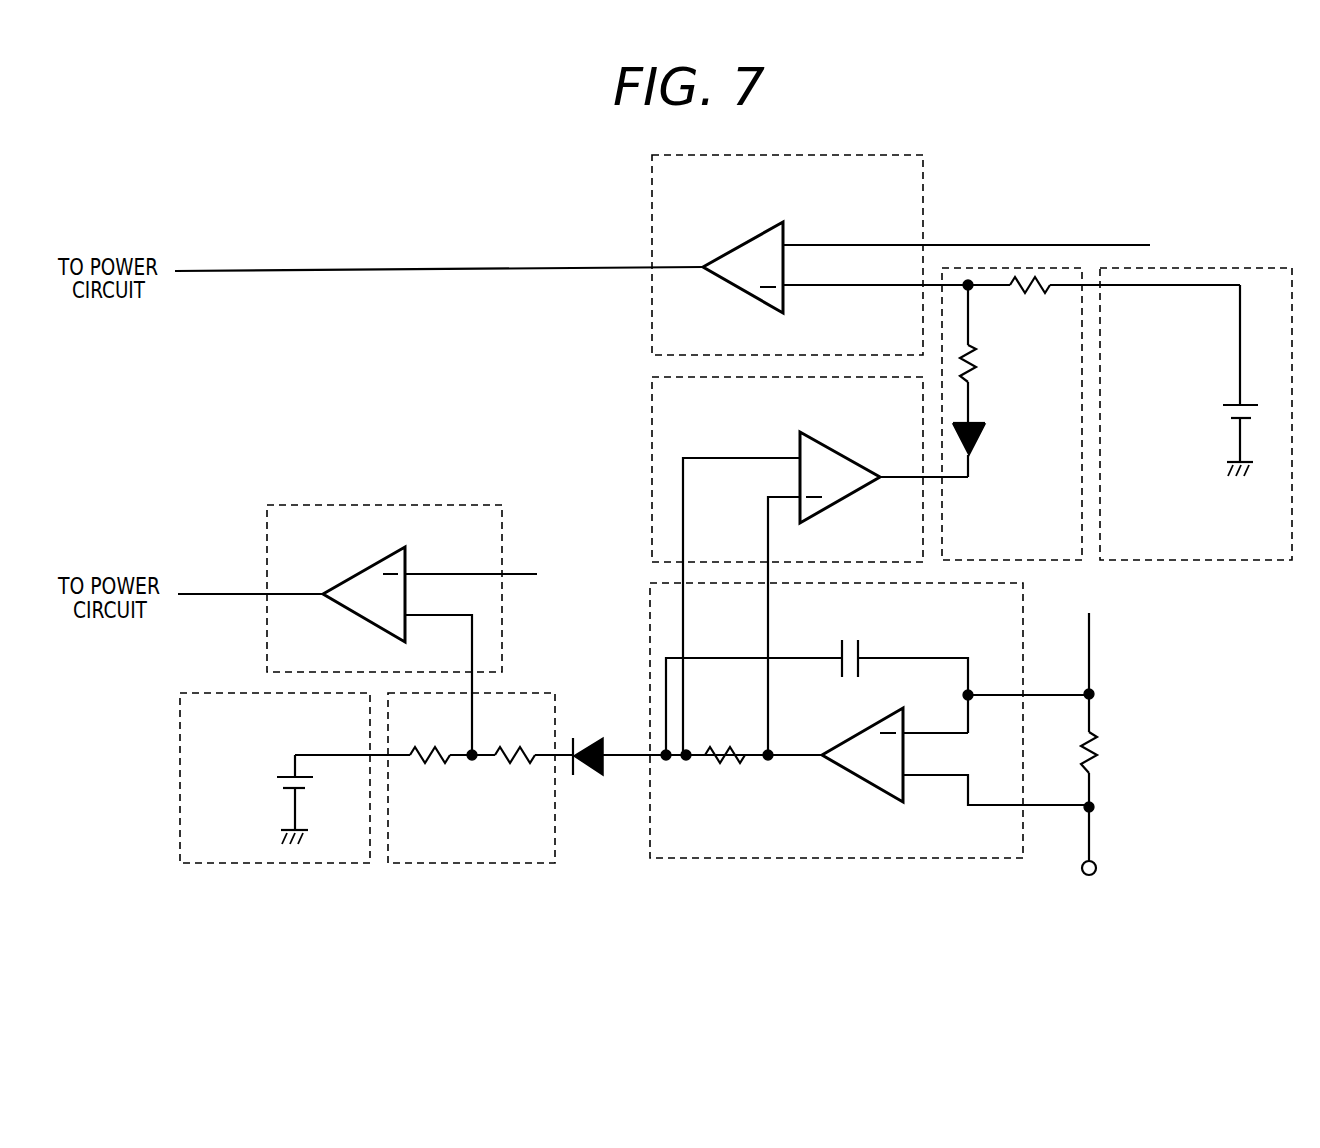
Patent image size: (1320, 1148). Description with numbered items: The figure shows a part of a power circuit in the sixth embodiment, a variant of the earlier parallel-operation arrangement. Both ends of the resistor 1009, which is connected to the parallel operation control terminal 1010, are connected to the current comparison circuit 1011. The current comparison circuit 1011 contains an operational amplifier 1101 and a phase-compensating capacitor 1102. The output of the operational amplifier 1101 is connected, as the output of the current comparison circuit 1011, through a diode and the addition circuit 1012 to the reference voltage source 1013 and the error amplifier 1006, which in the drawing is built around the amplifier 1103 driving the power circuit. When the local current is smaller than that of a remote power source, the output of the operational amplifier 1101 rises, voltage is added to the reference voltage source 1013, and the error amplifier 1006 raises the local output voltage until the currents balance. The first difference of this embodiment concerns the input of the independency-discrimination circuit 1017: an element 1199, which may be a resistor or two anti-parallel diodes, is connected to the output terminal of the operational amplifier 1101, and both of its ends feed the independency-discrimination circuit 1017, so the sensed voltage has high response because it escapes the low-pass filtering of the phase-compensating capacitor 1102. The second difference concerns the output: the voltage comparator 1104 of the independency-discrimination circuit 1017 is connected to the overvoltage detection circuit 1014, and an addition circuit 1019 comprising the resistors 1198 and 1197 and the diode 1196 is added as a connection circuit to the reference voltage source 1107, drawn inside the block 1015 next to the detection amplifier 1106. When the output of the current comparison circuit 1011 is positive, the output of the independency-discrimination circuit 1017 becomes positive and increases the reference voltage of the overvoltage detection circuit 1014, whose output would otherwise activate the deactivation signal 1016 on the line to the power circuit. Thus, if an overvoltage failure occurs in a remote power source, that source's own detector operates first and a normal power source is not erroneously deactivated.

The error amplifier 1006 is at (365, 505).
The resistor 1009 is at (1100, 756).
The parallel operation control terminal 1010 is at (1097, 868).
The current comparison circuit 1011 is at (912, 860).
The addition circuit 1012 is at (473, 865).
The reference voltage source 1013 is at (268, 865).
The overvoltage detection circuit 1014 is at (652, 204).
The reference voltage source 1015 is at (1222, 268).
The deactivation signal 1016 is at (313, 271).
The independency-discrimination circuit 1017 is at (650, 405).
The addition circuit 1019 is at (1012, 268).
The operational amplifier 1101 is at (862, 773).
The phase-compensating capacitor 1102 is at (838, 664).
The operational amplifier 1103 is at (346, 608).
The voltage comparator 1104 is at (858, 504).
The operational amplifier 1106 is at (733, 296).
The reference voltage source 1107 is at (1228, 415).
The diode 1196 is at (1002, 428).
The resistor 1197 is at (1006, 333).
The resistor 1198 is at (1026, 307).
The element 1199 is at (721, 770).